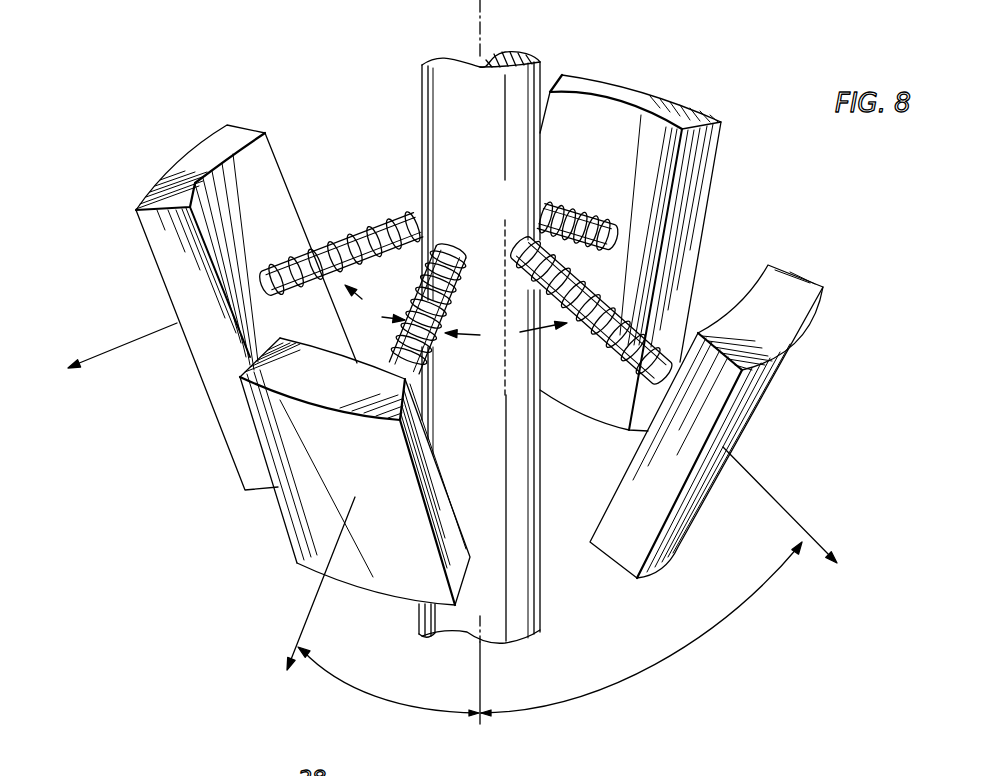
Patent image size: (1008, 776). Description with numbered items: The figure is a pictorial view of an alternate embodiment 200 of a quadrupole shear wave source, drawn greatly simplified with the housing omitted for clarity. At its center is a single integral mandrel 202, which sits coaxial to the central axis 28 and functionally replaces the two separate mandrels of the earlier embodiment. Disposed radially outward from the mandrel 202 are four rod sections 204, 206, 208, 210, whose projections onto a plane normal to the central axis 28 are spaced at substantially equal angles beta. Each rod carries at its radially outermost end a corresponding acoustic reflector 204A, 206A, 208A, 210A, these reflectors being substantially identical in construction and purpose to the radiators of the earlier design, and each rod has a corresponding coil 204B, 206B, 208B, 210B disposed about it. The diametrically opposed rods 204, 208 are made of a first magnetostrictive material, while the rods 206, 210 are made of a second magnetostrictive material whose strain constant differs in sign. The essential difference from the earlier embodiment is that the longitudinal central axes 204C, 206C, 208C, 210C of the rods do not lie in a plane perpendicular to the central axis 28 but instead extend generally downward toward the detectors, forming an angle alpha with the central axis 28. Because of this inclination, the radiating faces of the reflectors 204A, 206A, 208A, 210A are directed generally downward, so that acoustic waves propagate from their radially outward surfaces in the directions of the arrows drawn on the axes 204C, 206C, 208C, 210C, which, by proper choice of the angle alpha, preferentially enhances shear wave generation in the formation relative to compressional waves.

The central axis 28 is at (481, 10).
The alternate embodiment of quadrupole shear wave source 200 is at (486, 362).
The mandrel 202 is at (523, 605).
The rod section 204 is at (417, 350).
The acoustic reflector 204A is at (302, 510).
The coil 204B is at (455, 274).
The longitudinal central axis 204C is at (313, 612).
The rod section 206 is at (645, 345).
The acoustic reflector 206A is at (803, 293).
The coil 206B is at (607, 288).
The longitudinal central axis 206C is at (787, 505).
The rod section 208 is at (592, 230).
The acoustic reflector 208A is at (687, 110).
The coil 208B is at (548, 203).
The rod section 210 is at (330, 253).
The acoustic reflector 210A is at (190, 193).
The coil 210B is at (375, 222).
The longitudinal central axis 210C is at (112, 348).